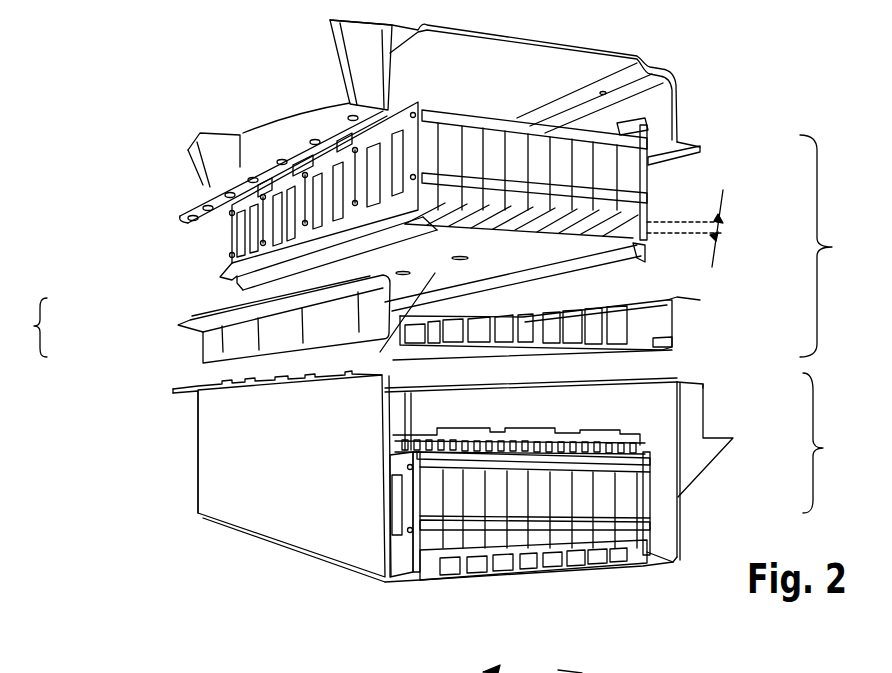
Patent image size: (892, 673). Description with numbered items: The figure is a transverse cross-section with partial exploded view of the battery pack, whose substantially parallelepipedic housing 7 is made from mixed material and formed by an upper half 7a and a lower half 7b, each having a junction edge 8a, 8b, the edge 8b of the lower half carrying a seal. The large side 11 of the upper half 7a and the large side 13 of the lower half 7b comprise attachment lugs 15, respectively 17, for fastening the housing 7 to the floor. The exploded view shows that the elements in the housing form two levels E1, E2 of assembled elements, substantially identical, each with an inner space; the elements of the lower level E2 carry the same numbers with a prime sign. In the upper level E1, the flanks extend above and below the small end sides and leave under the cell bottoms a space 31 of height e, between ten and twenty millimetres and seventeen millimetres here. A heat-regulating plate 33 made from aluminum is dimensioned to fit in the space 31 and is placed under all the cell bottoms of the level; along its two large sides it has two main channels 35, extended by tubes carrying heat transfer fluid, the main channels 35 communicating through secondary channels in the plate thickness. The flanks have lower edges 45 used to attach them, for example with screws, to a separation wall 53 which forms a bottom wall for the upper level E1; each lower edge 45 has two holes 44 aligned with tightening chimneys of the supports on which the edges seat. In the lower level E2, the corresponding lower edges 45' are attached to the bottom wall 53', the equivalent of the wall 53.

The housing 7 is at (33, 327).
The upper half 7a is at (214, 101).
The lower half 7b is at (178, 511).
The large side 11 is at (293, 123).
The attachment lug 15 is at (218, 158).
The hole 44 is at (228, 272).
The lower edge 45 is at (238, 199).
The main channel 35 is at (253, 287).
The space 31 is at (638, 233).
The separation wall 53 is at (590, 337).
The junction edge 8a is at (683, 147).
The junction edge 8b is at (218, 393).
The heat-regulating plate 33 is at (395, 348).
The large side 13 is at (278, 485).
The attachment lug 17 is at (698, 457).
The lower edge 45' is at (481, 531).
The bottom wall 53' is at (508, 604).
The height e is at (687, 230).
The upper level E1 is at (834, 246).
The lower level E2 is at (829, 443).